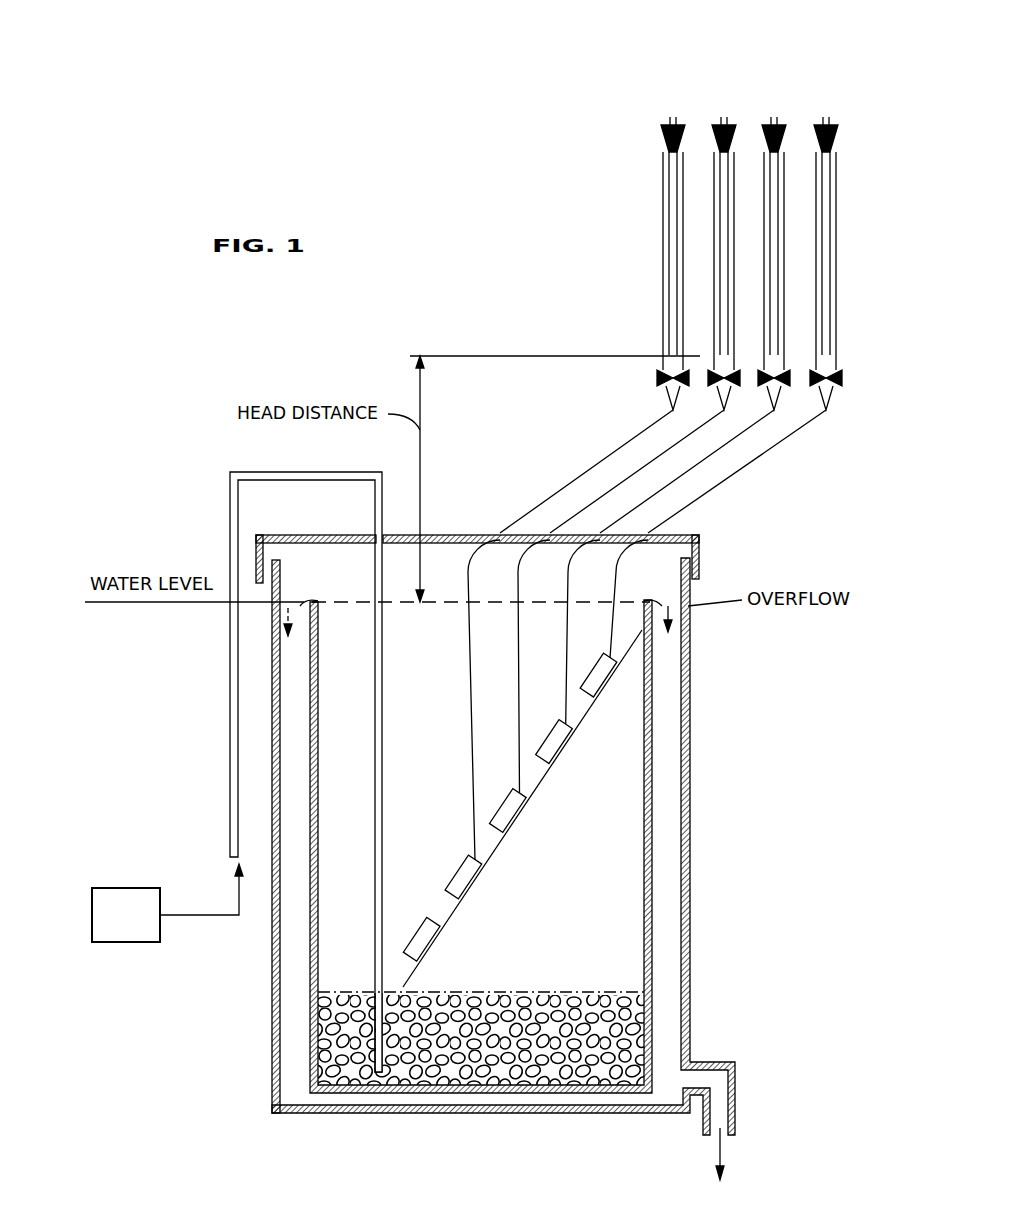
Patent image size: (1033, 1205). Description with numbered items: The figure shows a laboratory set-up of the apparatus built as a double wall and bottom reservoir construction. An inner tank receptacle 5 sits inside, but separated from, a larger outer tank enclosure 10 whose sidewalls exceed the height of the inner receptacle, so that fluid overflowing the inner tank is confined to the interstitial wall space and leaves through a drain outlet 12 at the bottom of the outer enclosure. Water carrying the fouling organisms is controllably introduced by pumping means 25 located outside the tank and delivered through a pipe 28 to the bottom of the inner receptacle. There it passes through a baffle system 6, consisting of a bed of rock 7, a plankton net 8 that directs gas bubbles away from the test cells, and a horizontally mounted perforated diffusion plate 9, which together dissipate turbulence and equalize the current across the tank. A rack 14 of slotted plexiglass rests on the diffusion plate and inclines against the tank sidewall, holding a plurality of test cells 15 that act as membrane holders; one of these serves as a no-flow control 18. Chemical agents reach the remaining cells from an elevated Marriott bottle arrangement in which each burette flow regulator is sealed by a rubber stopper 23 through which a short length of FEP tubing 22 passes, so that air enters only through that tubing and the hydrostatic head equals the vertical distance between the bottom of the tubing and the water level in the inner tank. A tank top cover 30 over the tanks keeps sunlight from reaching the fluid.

The inner tank receptacle 5 is at (650, 948).
The baffle system 6 is at (290, 1050).
The bed of rock 7 is at (450, 990).
The plankton net 8 is at (540, 990).
The diffusion plate 9 is at (590, 990).
The outer tank enclosure 10 is at (688, 860).
The drain outlet 12 is at (720, 1150).
The rack 14 is at (545, 780).
The test cell 15 is at (508, 810).
The no-flow control 18 is at (426, 920).
The FEP tubing 22 is at (665, 297).
The rubber stopper 23 is at (718, 120).
The pumping means 25 is at (114, 935).
The pipe 28 is at (236, 781).
The tank top cover 30 is at (700, 545).